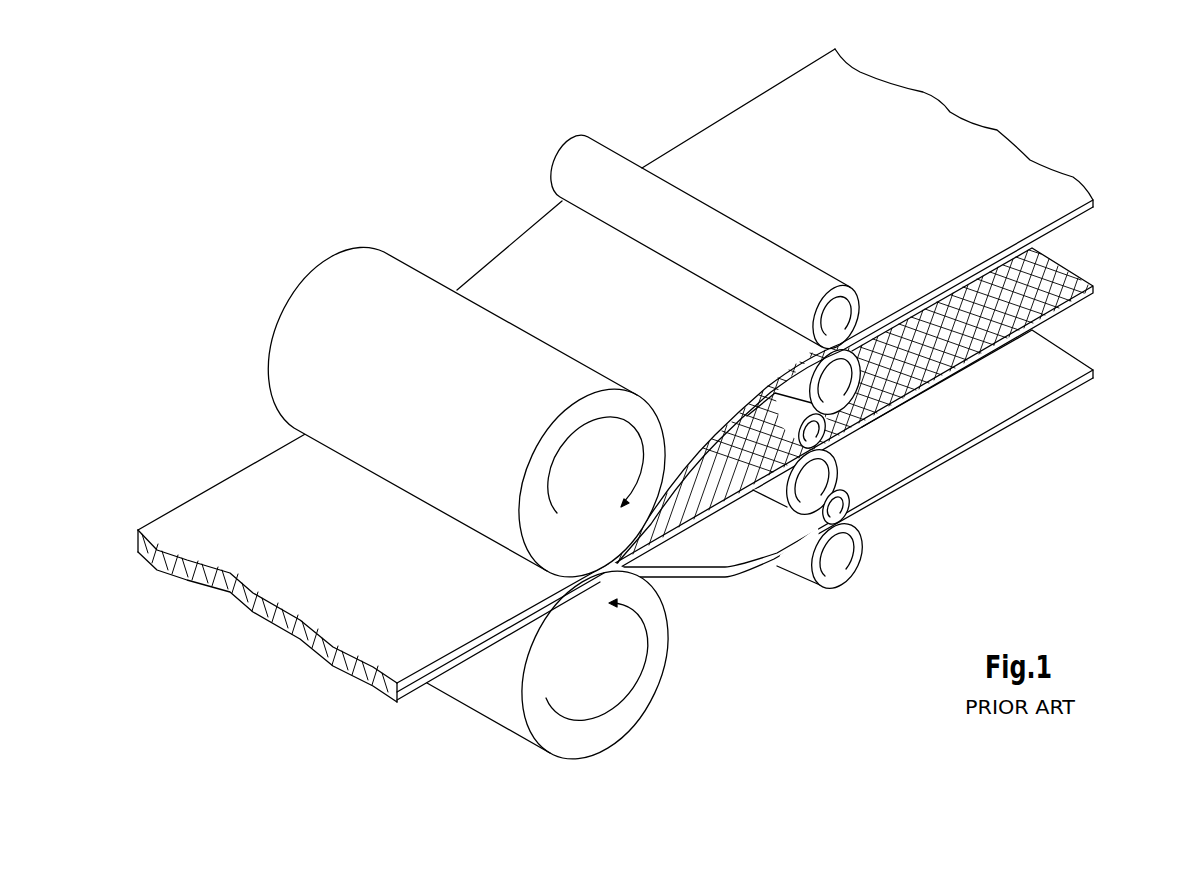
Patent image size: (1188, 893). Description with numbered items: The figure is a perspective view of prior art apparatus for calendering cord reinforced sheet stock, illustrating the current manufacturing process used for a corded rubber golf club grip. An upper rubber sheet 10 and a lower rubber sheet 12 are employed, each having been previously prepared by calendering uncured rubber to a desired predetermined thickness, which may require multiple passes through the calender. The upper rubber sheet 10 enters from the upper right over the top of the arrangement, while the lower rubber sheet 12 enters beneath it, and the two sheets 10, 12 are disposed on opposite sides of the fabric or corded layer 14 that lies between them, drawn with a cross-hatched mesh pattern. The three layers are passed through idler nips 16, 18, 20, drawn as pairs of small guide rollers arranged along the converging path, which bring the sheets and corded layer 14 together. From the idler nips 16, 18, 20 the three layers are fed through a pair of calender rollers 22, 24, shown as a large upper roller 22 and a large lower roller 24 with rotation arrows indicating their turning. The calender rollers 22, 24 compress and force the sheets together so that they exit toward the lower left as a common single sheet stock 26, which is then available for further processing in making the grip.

The upper rubber sheet 10 is at (738, 107).
The lower rubber sheet 12 is at (1040, 410).
The mesh reinforcing layer 14 is at (1078, 263).
The idler nip 16 is at (872, 347).
The idler nip 18 is at (790, 414).
The idler nip 20 is at (876, 520).
The calender roller 22 is at (407, 264).
The calender roller 24 is at (663, 653).
The common single sheet stock 26 is at (418, 697).